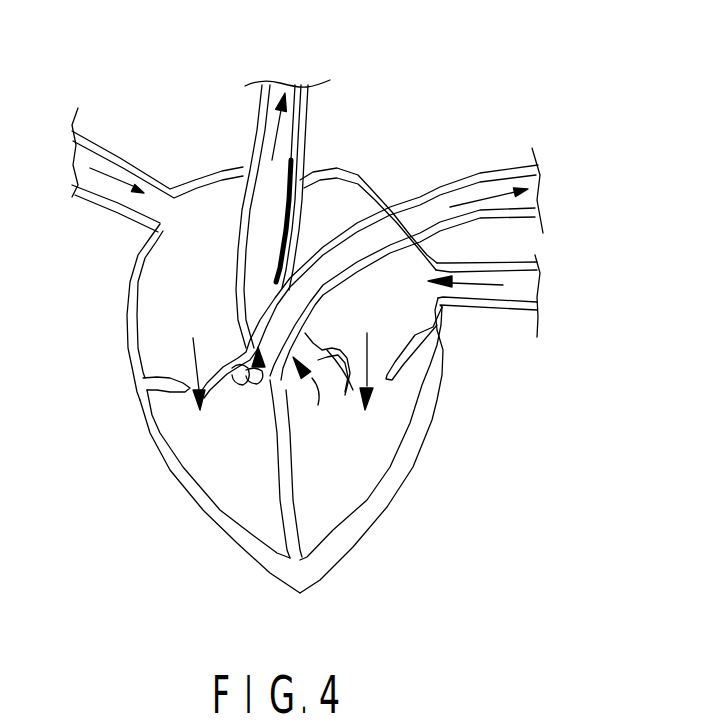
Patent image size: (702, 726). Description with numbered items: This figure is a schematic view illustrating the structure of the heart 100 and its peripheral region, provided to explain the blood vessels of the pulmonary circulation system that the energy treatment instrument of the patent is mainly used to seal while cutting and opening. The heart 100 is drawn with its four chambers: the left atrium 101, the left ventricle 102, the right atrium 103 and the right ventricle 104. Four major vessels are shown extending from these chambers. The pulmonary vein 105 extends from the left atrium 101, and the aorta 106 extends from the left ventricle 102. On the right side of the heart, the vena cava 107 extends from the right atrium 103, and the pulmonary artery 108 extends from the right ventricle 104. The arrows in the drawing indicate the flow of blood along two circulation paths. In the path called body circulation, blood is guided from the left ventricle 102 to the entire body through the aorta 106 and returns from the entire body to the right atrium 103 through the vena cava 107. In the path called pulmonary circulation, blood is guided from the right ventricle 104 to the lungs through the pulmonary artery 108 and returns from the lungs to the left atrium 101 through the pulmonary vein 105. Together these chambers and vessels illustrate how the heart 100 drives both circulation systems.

The heart 100 is at (440, 119).
The left atrium 101 is at (347, 197).
The left ventricle 102 is at (372, 470).
The right atrium 103 is at (157, 268).
The right ventricle 104 is at (210, 465).
The pulmonary vein 105 is at (493, 307).
The aorta 106 is at (255, 137).
The vena cava 107 is at (133, 160).
The pulmonary artery 108 is at (523, 173).